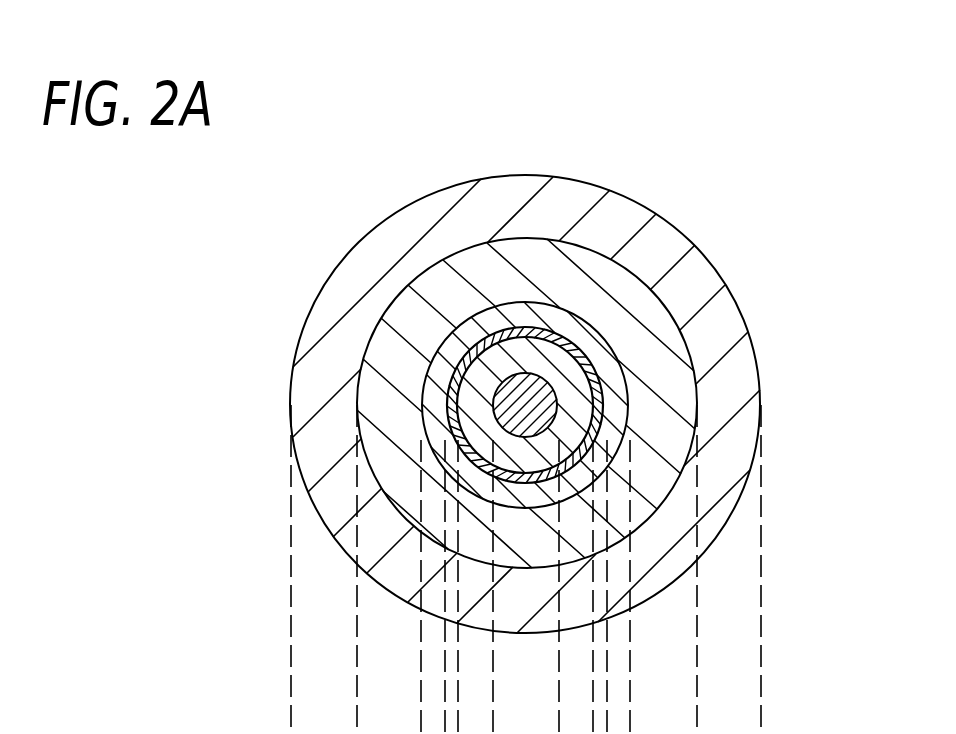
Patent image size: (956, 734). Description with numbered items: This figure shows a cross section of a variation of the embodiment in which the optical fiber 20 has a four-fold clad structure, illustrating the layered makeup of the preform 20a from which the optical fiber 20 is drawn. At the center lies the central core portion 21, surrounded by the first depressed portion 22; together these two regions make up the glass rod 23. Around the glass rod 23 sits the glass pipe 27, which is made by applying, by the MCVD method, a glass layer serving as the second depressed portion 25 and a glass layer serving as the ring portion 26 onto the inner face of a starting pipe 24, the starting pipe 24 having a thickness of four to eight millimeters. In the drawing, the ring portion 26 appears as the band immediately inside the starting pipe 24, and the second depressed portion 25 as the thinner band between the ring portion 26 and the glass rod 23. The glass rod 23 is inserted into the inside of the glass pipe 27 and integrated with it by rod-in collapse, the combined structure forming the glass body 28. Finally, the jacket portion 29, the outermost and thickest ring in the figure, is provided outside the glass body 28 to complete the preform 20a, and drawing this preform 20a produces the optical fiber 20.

The preform 20a is at (742, 203).
The optical fiber 20 is at (579, 369).
The central core portion 21 is at (523, 380).
The first depressed portion 22 is at (565, 345).
The glass rod 23 is at (663, 118).
The starting pipe 24 is at (437, 280).
The second depressed portion 25 is at (510, 328).
The ring portion 26 is at (481, 335).
The glass pipe 27 is at (357, 118).
The glass body 28 is at (398, 62).
The jacket portion 29 is at (737, 375).